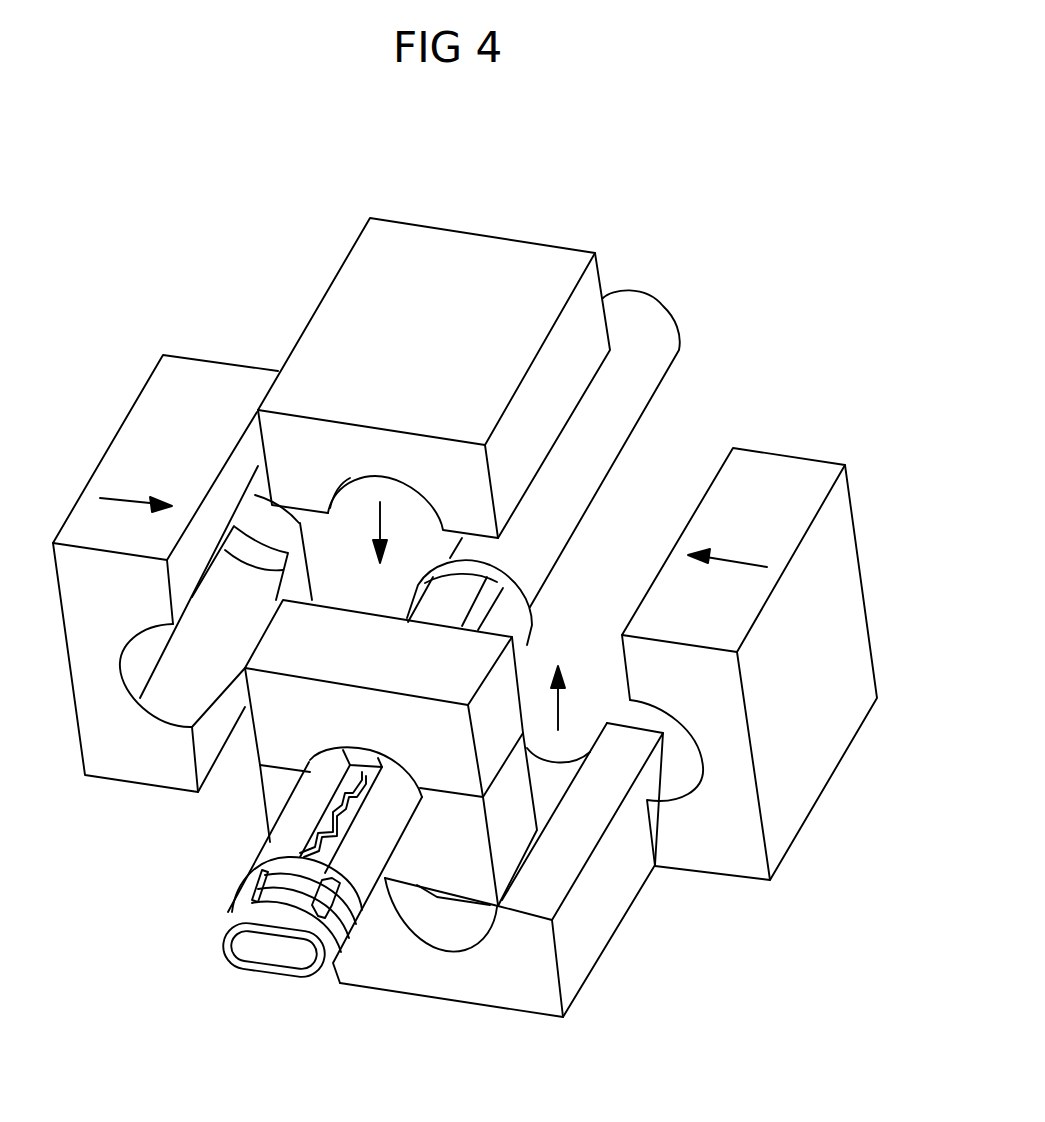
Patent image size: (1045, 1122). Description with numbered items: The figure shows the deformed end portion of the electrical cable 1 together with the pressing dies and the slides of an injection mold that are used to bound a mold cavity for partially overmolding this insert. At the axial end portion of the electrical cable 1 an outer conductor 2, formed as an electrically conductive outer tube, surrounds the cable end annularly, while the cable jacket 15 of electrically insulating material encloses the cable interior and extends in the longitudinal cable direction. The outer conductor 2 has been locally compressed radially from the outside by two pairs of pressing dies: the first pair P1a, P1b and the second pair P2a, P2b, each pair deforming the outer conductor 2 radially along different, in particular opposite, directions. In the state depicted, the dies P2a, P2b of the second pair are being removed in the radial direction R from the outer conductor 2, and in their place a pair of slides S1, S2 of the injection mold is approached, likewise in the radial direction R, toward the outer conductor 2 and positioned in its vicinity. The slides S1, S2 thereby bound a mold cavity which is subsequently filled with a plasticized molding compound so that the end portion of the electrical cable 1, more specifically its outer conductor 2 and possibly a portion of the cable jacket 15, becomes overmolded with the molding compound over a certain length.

The electrical cable 1 is at (634, 533).
The outer conductor 2 is at (225, 950).
The cable jacket 15 is at (655, 333).
The pressing die P1a is at (252, 748).
The pressing die P1b is at (258, 810).
The pressing die P2a is at (497, 253).
The pressing die P2b is at (587, 930).
The slide S1 is at (147, 418).
The slide S2 is at (850, 615).
The radial direction R is at (140, 498).